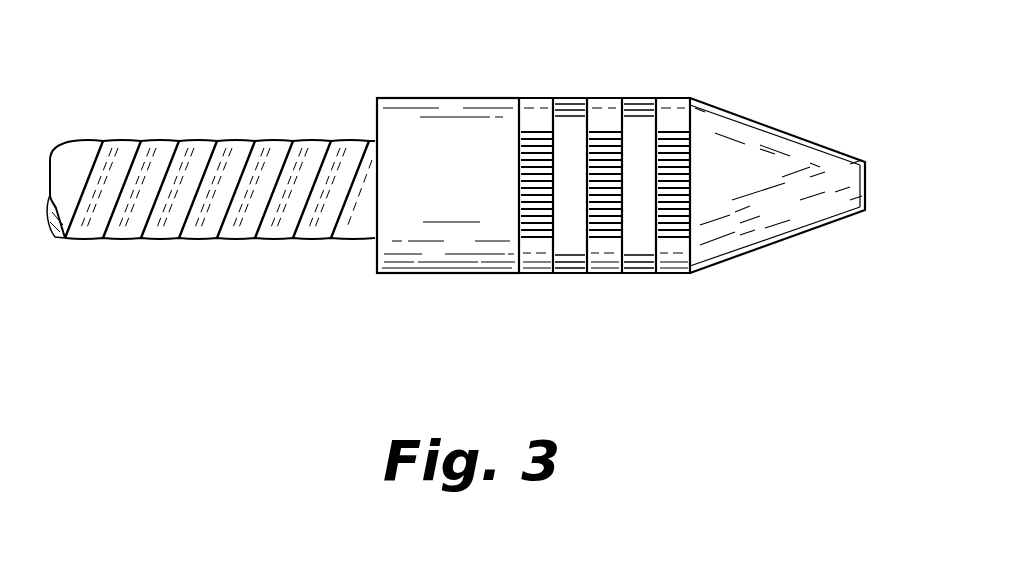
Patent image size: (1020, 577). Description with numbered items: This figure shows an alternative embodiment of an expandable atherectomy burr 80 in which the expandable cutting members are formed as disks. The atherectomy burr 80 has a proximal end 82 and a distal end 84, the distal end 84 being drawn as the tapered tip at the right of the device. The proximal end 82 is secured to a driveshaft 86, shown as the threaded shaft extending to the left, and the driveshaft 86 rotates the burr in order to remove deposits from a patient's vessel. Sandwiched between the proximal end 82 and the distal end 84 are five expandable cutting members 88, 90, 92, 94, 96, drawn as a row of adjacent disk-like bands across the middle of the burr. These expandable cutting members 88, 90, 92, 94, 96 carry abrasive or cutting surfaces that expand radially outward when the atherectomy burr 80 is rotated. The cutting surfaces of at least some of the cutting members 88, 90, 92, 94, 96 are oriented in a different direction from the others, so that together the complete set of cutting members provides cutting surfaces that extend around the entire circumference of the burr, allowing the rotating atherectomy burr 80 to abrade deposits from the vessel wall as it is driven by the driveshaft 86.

The atherectomy burr 80 is at (753, 103).
The proximal end 82 is at (437, 273).
The distal end 84 is at (745, 253).
The driveshaft 86 is at (233, 238).
The expandable cutting member 88 is at (537, 273).
The expandable cutting member 90 is at (575, 273).
The expandable cutting member 92 is at (607, 273).
The expandable cutting member 94 is at (638, 273).
The expandable cutting member 96 is at (678, 273).